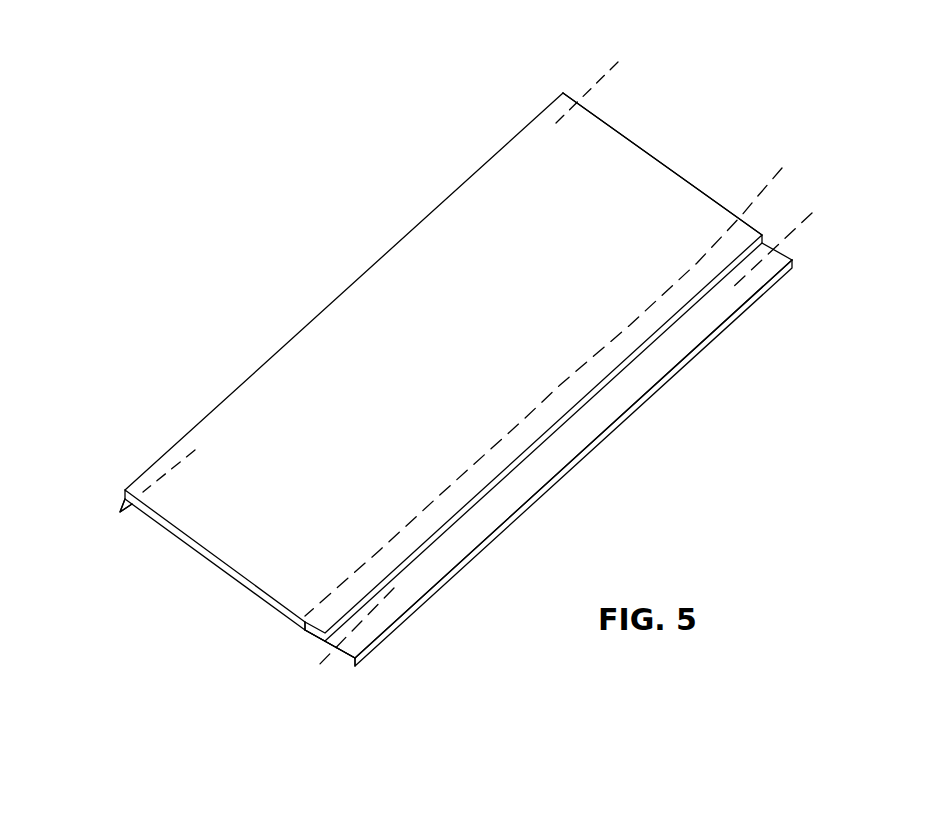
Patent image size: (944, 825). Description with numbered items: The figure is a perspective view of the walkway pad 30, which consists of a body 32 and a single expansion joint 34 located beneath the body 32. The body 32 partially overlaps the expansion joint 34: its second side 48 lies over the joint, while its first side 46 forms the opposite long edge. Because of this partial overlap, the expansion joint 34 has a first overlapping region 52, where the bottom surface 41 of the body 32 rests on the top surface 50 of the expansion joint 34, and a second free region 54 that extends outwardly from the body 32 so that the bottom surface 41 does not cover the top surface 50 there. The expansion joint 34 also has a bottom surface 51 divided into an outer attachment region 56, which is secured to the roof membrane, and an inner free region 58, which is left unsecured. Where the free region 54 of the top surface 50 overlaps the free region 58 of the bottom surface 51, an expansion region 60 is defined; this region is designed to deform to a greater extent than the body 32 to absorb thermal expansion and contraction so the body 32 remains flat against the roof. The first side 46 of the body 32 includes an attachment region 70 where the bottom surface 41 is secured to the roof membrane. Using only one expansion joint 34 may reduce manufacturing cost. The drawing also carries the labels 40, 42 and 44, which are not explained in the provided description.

The walkway pad 30 is at (721, 43).
The upper panel 40 is at (485, 358).
The first side of body 46 is at (330, 308).
The end edge of upper panel 42 is at (647, 149).
The body 32 is at (670, 198).
The front end face of upper panel 44 is at (227, 567).
The top surface of expansion joint 50 is at (423, 572).
The bottom surface of expansion joint 51 is at (380, 642).
The second free region 54 is at (643, 394).
The second side of body 48 is at (522, 458).
The expansion joint 34 is at (577, 437).
The bottom surface of body 41 is at (121, 513).
The attachment region of first side 70 is at (102, 521).
The outer attachment region 56 is at (348, 686).
The inner free region 58 is at (293, 657).
The first overlapping region 52 is at (728, 244).
The expansion region 60 is at (760, 244).